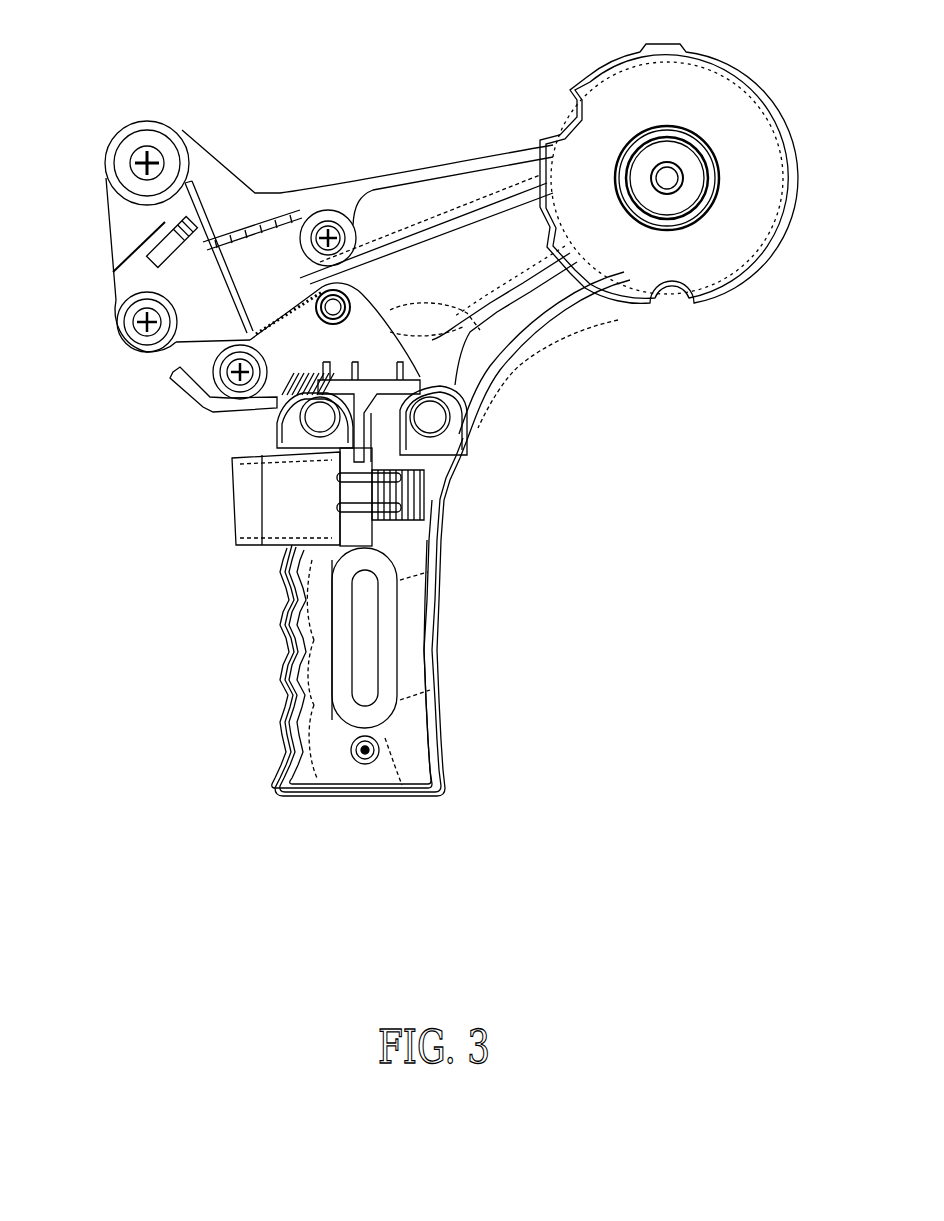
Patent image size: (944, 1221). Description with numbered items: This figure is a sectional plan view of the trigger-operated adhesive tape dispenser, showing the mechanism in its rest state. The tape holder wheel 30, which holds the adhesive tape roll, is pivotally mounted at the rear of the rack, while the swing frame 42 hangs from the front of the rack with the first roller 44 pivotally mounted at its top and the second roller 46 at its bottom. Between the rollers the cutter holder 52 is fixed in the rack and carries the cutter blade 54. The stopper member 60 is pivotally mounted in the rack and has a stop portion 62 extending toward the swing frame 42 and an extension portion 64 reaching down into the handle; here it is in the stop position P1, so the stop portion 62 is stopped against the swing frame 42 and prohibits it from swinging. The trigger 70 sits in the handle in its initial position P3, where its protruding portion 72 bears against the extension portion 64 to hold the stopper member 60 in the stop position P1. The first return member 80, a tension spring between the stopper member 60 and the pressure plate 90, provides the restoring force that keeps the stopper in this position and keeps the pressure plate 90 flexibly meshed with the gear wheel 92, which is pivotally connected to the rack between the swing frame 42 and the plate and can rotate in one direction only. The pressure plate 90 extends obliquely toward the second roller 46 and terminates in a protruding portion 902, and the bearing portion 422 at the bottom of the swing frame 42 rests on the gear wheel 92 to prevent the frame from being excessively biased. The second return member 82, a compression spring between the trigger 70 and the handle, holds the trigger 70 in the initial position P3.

The tape holder wheel 30 is at (700, 97).
The first roller 44 is at (147, 122).
The swing frame 42 is at (200, 258).
The stop portion 62 is at (262, 295).
The bearing portion 422 is at (328, 220).
The stop position P1 is at (385, 288).
The cutter holder 52 is at (140, 250).
The cutter blade 54 is at (118, 262).
The second roller 46 is at (112, 342).
The protruding portion 902 is at (172, 378).
The gear wheel 92 is at (268, 400).
The pressure plate 90 is at (240, 416).
The first return member 80 is at (274, 428).
The trigger 70 is at (262, 522).
The initial position P3 is at (270, 566).
The stopper member 60 is at (437, 300).
The protruding portion 72 is at (470, 418).
The extension portion 64 is at (463, 476).
The second return member 82 is at (435, 555).